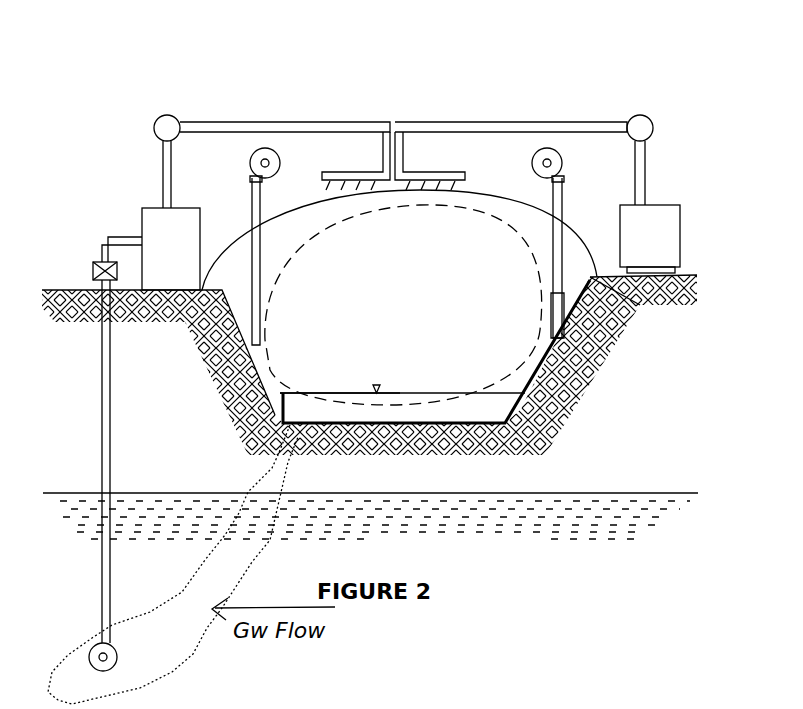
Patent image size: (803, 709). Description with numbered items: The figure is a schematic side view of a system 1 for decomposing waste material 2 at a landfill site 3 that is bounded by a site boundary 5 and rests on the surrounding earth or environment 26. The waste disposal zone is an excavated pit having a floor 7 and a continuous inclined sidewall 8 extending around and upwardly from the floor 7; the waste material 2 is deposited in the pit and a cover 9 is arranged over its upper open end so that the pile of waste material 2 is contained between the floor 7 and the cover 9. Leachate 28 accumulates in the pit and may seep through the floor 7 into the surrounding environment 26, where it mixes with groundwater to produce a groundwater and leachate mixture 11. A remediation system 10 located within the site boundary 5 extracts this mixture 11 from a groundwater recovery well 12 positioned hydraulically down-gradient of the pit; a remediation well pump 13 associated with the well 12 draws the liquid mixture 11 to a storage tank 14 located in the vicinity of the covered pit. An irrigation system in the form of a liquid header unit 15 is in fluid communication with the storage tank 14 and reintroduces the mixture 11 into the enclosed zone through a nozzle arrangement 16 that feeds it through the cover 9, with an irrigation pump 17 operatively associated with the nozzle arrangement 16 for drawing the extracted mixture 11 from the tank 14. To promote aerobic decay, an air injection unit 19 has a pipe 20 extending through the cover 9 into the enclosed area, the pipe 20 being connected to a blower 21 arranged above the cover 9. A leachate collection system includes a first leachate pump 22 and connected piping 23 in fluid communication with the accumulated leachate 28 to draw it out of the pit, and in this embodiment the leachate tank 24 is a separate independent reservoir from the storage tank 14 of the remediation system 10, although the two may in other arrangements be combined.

The system 1 is at (433, 85).
The waste material 2 is at (395, 321).
The landfill site 3 is at (647, 705).
The site boundary 5 is at (584, 703).
The floor 7 is at (470, 435).
The continuous inclined sidewall 8 is at (535, 378).
The cover 9 is at (485, 200).
The remediation system 10 is at (124, 141).
The groundwater/leachate mixture 11 is at (86, 600).
The groundwater recovery well 12 is at (100, 432).
The remediation well pump 13 is at (120, 657).
The storage tank 14 is at (150, 222).
The liquid header unit 15 is at (270, 122).
The nozzle arrangement 16 is at (355, 172).
The irrigation pump 17 is at (163, 117).
The air injection unit 19 is at (248, 178).
The pipe 20 is at (250, 214).
The blower 21 is at (254, 150).
The first leachate pump 22 is at (300, 393).
The piping 23 is at (403, 410).
The leachate tank 24 is at (683, 230).
The surrounding earth/environment 26 is at (617, 317).
The leachate 28 is at (392, 393).